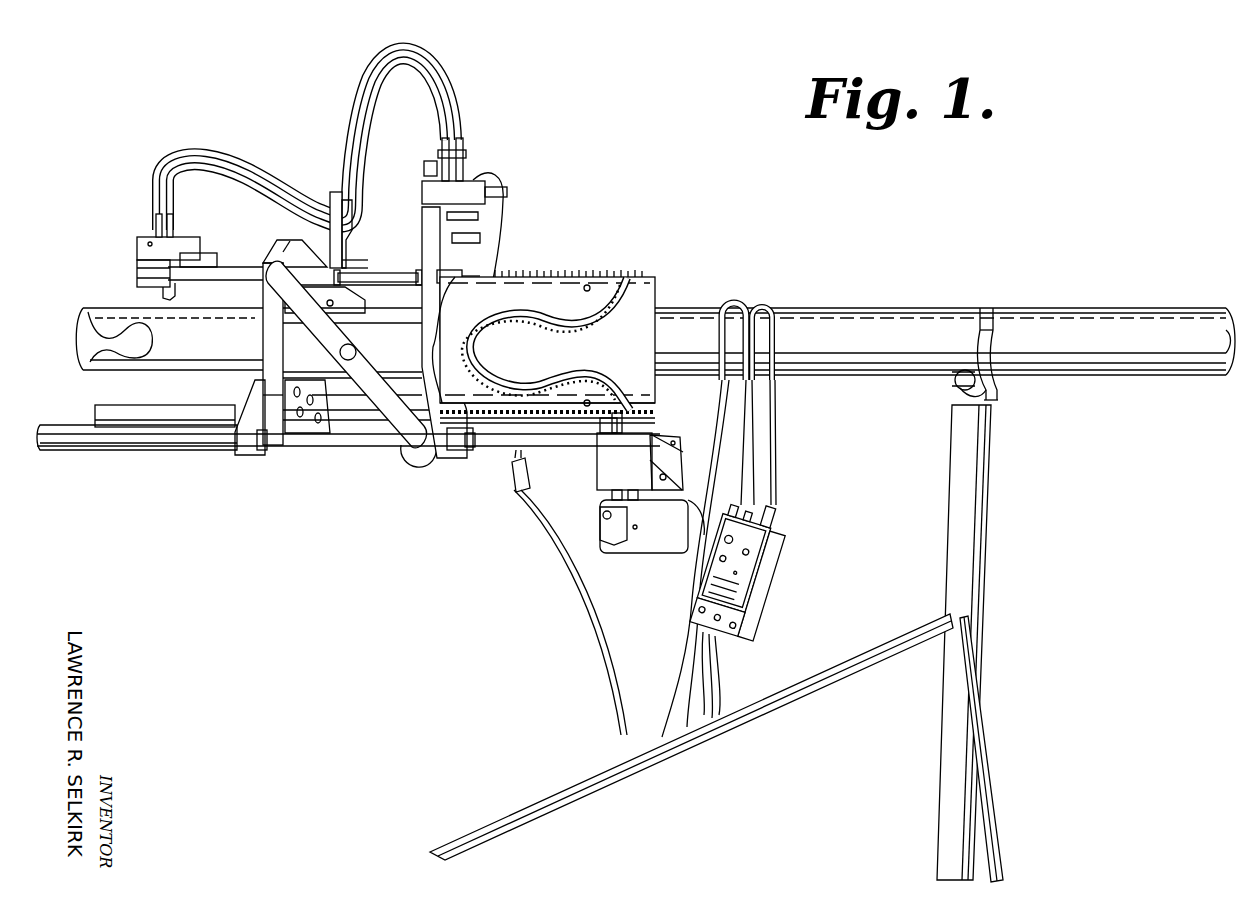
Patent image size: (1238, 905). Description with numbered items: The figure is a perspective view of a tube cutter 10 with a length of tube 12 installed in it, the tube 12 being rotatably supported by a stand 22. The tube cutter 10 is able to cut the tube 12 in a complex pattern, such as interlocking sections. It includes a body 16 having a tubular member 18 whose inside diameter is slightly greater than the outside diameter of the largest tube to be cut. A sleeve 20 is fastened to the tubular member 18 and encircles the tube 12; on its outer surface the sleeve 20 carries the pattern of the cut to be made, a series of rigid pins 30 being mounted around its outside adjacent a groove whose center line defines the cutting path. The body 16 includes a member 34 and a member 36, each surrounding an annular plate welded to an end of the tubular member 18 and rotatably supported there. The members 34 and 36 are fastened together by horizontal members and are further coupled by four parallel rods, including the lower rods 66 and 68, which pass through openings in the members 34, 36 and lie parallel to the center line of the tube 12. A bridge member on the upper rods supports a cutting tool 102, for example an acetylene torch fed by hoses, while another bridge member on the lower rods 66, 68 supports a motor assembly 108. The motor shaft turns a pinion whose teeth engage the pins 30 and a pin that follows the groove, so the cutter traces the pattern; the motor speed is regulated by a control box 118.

The tube cutter 10 is at (540, 263).
The tube 12 is at (843, 316).
The body 16 is at (311, 193).
The tubular member 18 is at (387, 312).
The sleeve 20 is at (623, 273).
The stand 22 is at (968, 535).
The rigid pins 30 is at (615, 276).
The member 34 is at (430, 340).
The member 36 is at (283, 251).
The rod 66 is at (104, 410).
The rod 68 is at (174, 451).
The cutting tool 102 is at (160, 296).
The motor assembly 108 is at (684, 437).
The control box 118 is at (774, 553).